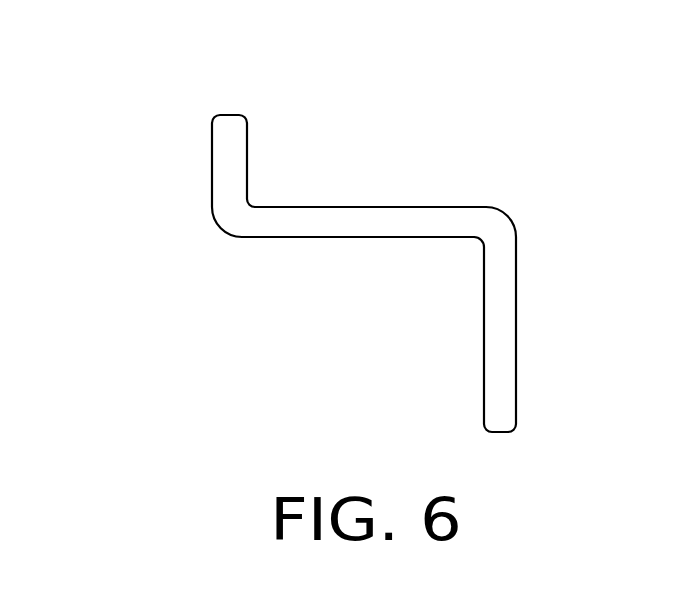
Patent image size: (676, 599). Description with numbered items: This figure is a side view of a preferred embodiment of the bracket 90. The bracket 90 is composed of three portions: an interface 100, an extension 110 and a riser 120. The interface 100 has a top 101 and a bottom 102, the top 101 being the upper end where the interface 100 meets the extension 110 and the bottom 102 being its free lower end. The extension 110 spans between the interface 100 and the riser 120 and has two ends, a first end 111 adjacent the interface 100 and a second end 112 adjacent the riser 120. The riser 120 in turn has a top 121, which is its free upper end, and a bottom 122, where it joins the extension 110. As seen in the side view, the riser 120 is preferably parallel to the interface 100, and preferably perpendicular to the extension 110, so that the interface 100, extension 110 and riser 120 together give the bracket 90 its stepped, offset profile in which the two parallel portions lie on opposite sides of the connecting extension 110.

The bracket 90 is at (376, 166).
The interface 100 is at (515, 310).
The top of the interface 101 is at (516, 238).
The bottom of the interface 102 is at (517, 422).
The extension 110 is at (362, 237).
The end of the extension 111 is at (476, 207).
The end of the extension 112 is at (257, 242).
The riser 120 is at (210, 155).
The top of the riser 121 is at (247, 125).
The bottom of the riser 122 is at (212, 208).